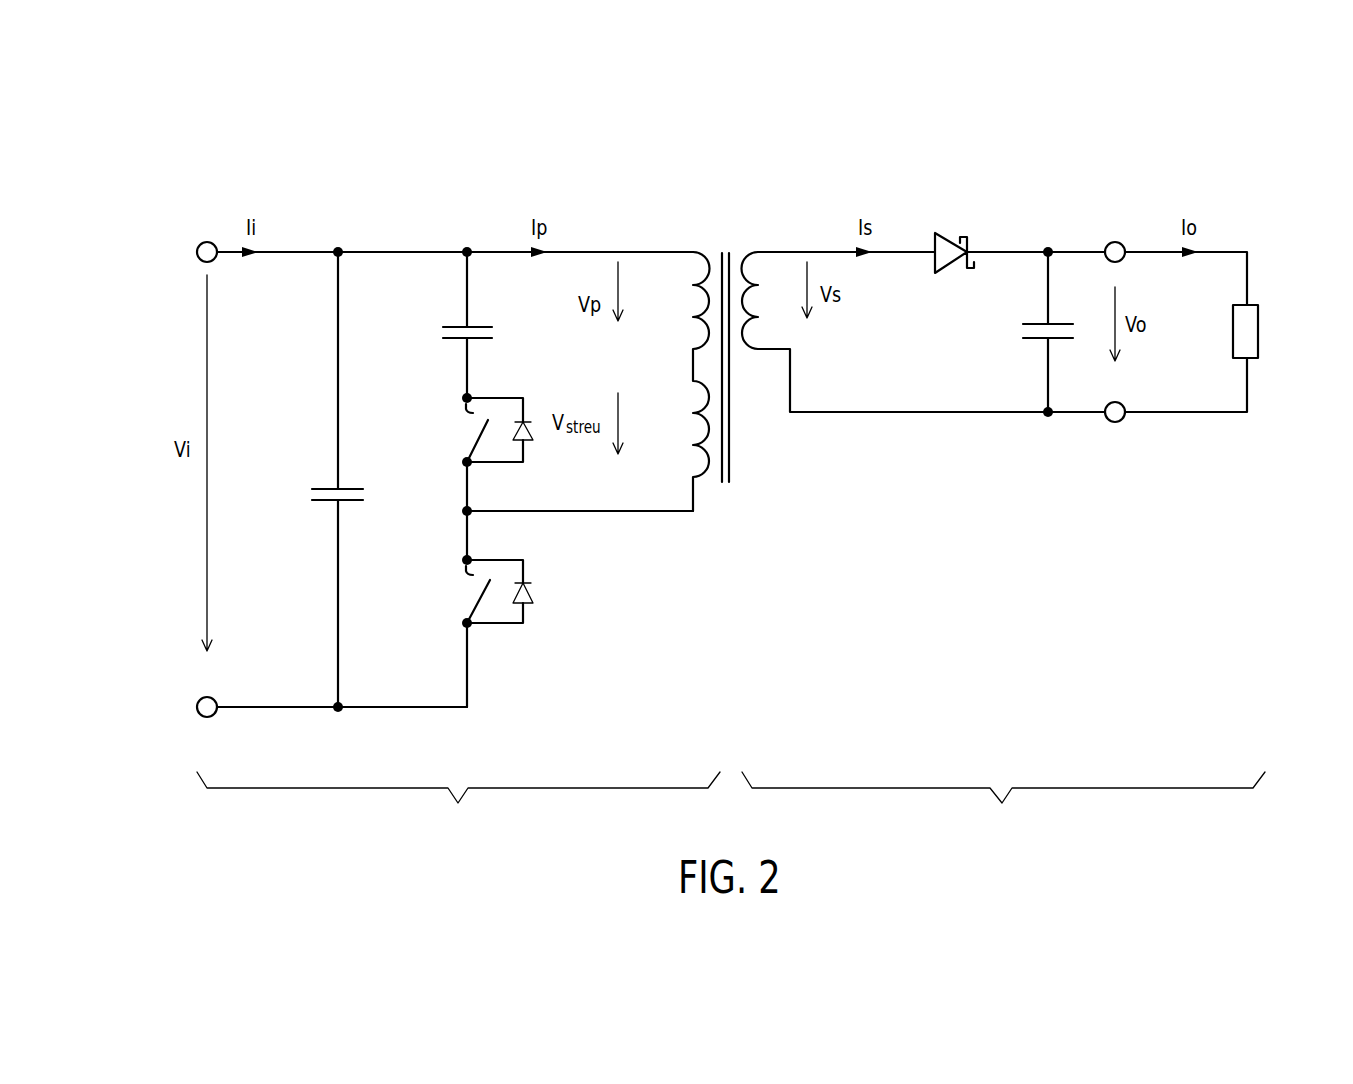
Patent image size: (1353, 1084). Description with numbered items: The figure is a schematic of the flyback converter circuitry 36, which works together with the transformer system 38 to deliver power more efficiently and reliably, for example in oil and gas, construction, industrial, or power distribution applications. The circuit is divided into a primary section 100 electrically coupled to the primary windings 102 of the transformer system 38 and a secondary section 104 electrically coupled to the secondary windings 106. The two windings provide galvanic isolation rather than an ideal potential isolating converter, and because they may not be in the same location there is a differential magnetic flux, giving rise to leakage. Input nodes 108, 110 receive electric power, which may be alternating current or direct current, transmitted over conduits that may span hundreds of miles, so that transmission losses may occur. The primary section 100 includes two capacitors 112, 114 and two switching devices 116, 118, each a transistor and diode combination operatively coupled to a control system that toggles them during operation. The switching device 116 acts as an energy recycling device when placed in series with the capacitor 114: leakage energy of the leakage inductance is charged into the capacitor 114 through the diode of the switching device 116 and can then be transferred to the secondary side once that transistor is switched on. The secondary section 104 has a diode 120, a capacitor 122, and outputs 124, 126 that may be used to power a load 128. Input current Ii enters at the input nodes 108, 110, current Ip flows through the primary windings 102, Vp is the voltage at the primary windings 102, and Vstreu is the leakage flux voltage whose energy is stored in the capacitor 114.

The flyback converter circuitry 36 is at (577, 134).
The transformer system 38 is at (733, 190).
The primary section 100 is at (458, 804).
The primary windings 102 is at (698, 227).
The secondary section 104 is at (1003, 804).
The secondary windings 106 is at (767, 228).
The input node 108 is at (169, 237).
The input node 110 is at (169, 691).
The capacitor 112 is at (325, 505).
The capacitor 114 is at (453, 340).
The switching device 116 is at (525, 447).
The switching device 118 is at (525, 615).
The diode 120 is at (972, 246).
The capacitor 122 is at (1035, 322).
The output 124 is at (1115, 242).
The output 126 is at (1115, 423).
The load 128 is at (1250, 305).